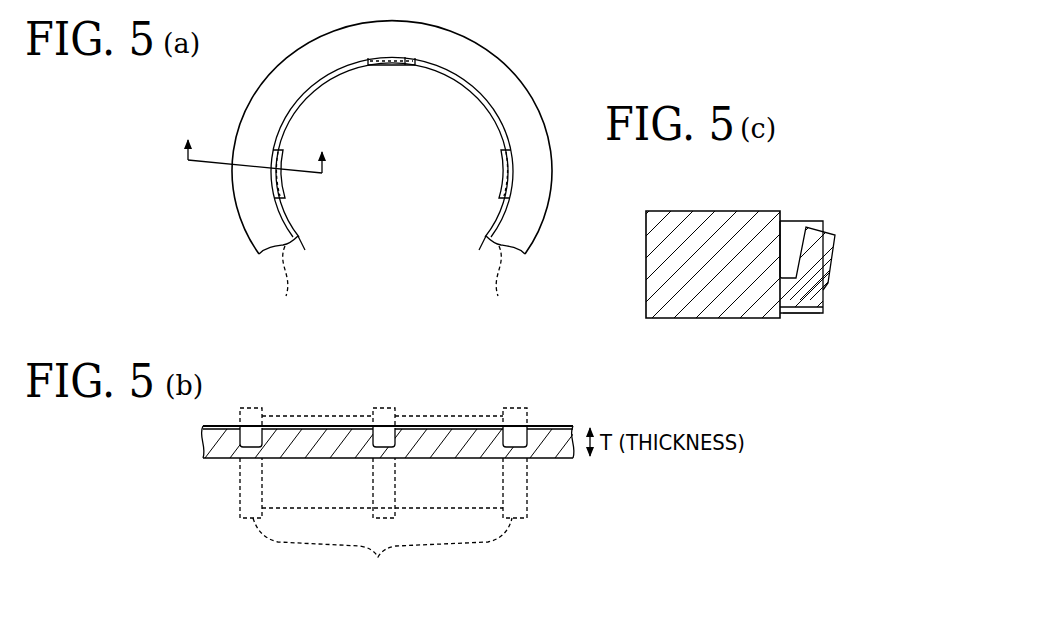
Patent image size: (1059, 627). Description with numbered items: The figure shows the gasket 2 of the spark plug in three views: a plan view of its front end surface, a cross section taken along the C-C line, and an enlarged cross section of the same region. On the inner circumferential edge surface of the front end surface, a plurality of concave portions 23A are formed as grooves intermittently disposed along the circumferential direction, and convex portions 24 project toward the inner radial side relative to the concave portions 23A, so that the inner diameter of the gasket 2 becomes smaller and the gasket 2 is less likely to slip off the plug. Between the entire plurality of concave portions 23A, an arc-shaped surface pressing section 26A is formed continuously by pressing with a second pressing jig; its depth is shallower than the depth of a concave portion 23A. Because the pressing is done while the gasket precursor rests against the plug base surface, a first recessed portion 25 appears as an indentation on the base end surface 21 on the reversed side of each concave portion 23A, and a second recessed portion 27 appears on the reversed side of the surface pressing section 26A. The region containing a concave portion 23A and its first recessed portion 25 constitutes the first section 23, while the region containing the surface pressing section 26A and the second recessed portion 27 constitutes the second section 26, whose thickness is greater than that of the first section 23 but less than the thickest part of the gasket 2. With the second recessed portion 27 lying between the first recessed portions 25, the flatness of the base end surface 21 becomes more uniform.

The gasket 2 is at (587, 122).
The base end surface 21 is at (738, 320).
The first section 23 is at (382, 550).
The concave portion 23A is at (408, 70).
The convex portion 24 is at (374, 70).
The first recessed portion 25 is at (378, 460).
The second section 26 is at (317, 413).
The surface pressing section 26A is at (300, 96).
The second recessed portion 27 is at (447, 459).